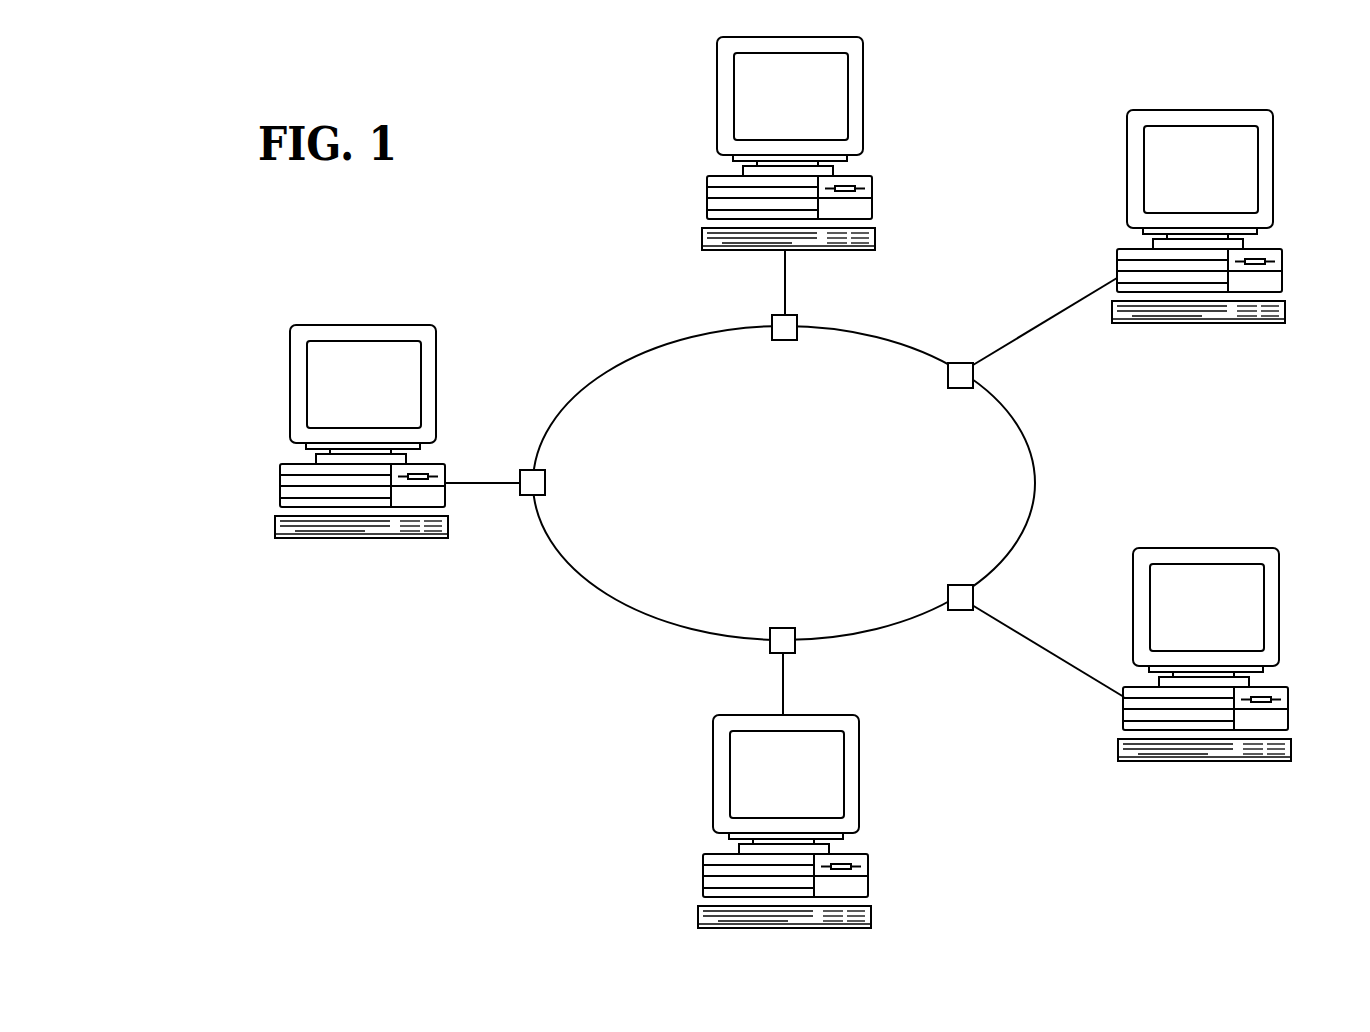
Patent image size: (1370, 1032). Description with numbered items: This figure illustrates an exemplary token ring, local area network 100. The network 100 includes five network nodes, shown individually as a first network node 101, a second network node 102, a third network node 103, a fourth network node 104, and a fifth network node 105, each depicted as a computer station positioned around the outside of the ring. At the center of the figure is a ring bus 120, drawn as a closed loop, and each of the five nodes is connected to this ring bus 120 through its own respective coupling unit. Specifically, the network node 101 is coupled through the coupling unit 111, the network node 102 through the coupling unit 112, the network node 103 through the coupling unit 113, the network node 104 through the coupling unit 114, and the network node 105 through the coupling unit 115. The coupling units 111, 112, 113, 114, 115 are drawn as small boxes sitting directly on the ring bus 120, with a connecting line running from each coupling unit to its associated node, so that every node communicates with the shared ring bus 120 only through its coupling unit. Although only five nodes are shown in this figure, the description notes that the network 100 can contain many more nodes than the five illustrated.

The network 100 is at (376, 758).
The network node 101 is at (864, 97).
The network node 102 is at (1274, 166).
The network node 103 is at (1281, 617).
The network node 104 is at (713, 774).
The network node 105 is at (290, 385).
The coupling unit 111 is at (790, 342).
The coupling unit 112 is at (961, 389).
The coupling unit 113 is at (954, 584).
The coupling unit 114 is at (785, 627).
The coupling unit 115 is at (546, 483).
The ring bus 120 is at (620, 362).